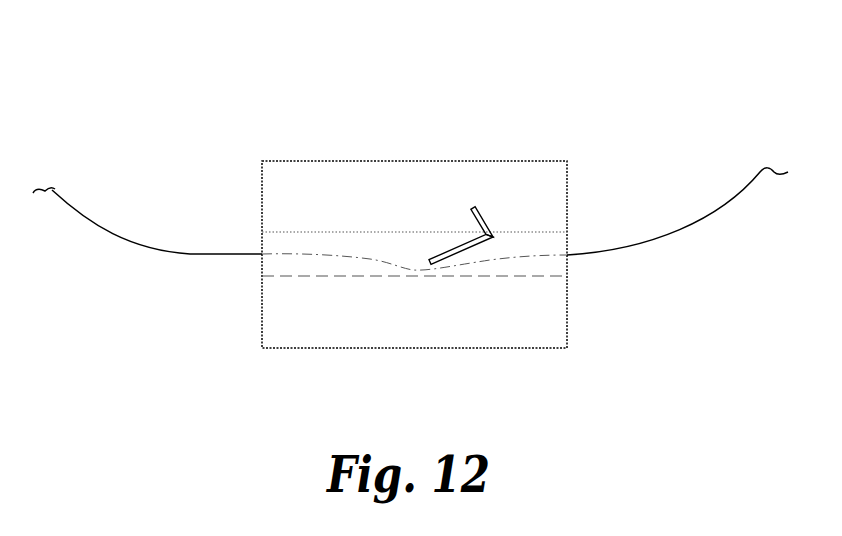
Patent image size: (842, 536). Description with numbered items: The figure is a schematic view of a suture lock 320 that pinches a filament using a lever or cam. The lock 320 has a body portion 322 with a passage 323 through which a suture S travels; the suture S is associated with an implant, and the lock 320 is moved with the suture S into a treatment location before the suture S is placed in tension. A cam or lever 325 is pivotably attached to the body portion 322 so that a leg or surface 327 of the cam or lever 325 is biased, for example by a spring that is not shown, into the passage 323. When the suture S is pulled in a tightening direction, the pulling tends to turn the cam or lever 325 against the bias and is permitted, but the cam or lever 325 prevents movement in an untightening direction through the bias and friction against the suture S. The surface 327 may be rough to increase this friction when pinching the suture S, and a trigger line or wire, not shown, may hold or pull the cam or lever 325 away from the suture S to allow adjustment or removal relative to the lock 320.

The lock 320 is at (596, 98).
The body portion 322 is at (553, 337).
The passage 323 is at (567, 245).
The cam or lever 325 is at (477, 212).
The leg or surface 327 is at (440, 253).
The suture S is at (98, 229).